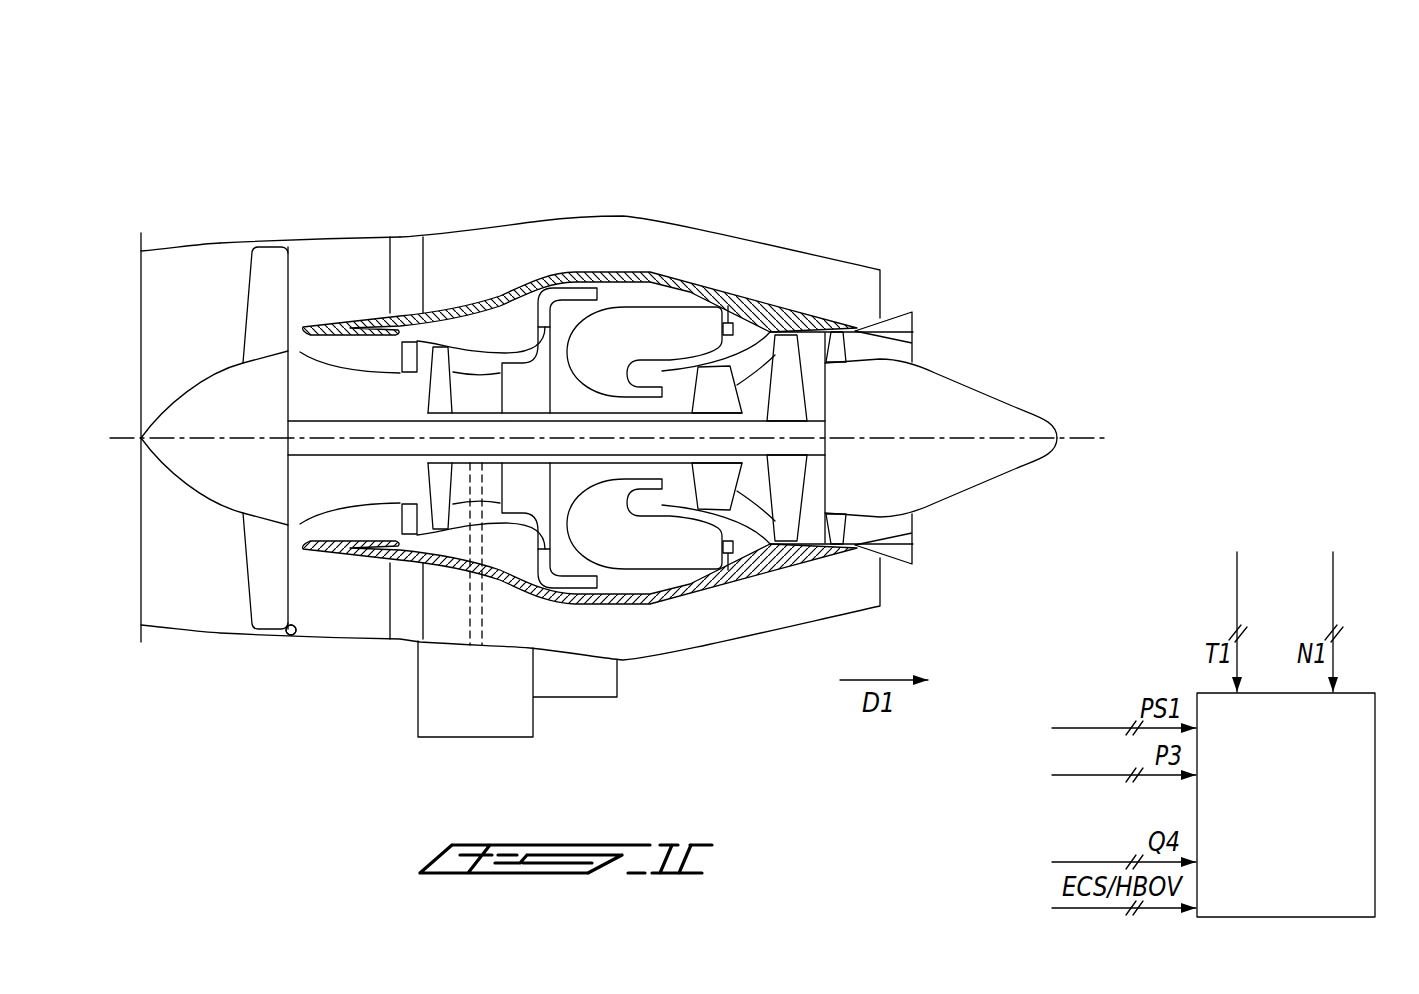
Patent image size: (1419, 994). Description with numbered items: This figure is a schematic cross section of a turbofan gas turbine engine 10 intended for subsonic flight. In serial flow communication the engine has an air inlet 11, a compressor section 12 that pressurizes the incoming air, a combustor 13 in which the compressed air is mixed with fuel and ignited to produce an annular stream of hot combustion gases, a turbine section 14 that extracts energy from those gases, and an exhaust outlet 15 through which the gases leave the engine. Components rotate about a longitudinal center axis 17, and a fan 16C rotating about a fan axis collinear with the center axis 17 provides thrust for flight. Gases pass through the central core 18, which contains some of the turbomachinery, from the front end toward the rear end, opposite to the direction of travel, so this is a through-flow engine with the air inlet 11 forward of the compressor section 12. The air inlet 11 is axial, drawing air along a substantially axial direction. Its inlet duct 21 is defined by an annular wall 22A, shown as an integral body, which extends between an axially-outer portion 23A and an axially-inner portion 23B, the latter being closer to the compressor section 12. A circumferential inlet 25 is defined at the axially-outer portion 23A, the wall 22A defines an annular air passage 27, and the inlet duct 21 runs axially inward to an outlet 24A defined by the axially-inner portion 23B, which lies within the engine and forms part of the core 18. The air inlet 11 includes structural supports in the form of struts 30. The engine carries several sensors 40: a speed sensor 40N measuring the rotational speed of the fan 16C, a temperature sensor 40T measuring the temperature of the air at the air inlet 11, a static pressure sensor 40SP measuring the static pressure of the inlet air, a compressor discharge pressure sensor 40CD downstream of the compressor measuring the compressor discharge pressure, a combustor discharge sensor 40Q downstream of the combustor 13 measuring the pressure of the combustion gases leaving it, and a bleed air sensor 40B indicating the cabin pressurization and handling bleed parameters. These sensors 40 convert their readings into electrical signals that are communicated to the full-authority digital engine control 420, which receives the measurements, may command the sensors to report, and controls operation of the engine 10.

The gas turbine engine 10 is at (768, 181).
The air inlet 11 is at (158, 306).
The compressor section 12 is at (490, 602).
The combustor 13 is at (646, 323).
The turbine section 14 is at (752, 492).
The exhaust outlet 15 is at (922, 336).
The fan 16C is at (262, 566).
The longitudinal center axis 17 is at (1083, 438).
The central core 18 is at (613, 579).
The inlet duct 21 is at (183, 247).
The annular wall 22A is at (216, 244).
The axially-outer portion 23A is at (132, 247).
The axially-inner portion 23B is at (467, 227).
The outlet 24A is at (478, 273).
The inlet 25 is at (165, 360).
The annular air passage 27 is at (208, 340).
The struts 30 is at (402, 247).
The sensors 40 is at (291, 636).
The speed sensor 40N is at (821, 605).
The temperature sensor 40T is at (1238, 605).
The static pressure sensor 40SP is at (1093, 728).
The compressor discharge pressure sensor 40CD is at (1090, 774).
The combustor discharge sensor 40Q is at (1097, 862).
The bleed air sensor 40B is at (1099, 908).
The full-authority digital engine control (FADEC) 420 is at (1365, 693).